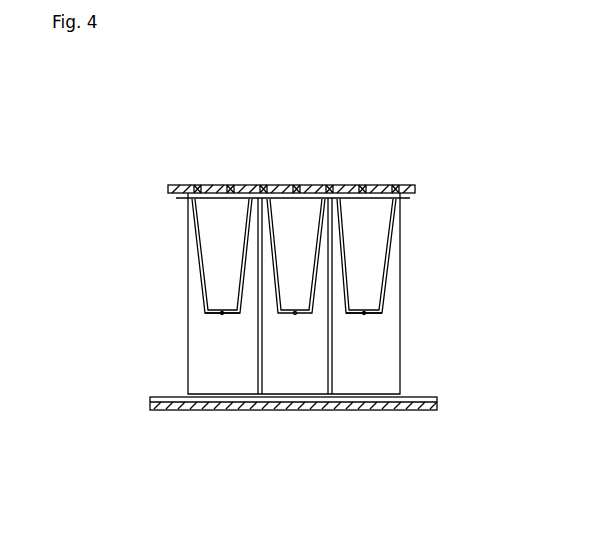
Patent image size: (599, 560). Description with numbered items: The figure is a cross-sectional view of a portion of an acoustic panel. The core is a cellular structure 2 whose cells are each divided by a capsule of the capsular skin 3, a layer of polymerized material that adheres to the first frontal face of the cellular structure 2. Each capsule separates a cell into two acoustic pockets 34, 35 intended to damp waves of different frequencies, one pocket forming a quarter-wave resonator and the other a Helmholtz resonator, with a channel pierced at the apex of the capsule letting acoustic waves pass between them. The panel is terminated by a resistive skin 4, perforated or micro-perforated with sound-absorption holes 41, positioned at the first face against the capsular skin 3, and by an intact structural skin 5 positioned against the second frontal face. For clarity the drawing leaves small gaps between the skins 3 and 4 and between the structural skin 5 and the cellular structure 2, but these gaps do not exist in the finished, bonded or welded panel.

The cellular structure 2 is at (399, 325).
The capsular skin 3 is at (400, 222).
The resistive skin 4 is at (406, 188).
The sound-absorption holes 41 is at (349, 172).
The acoustic pocket 34 is at (219, 269).
The acoustic pocket 35 is at (230, 368).
The structural skin 5 is at (415, 410).